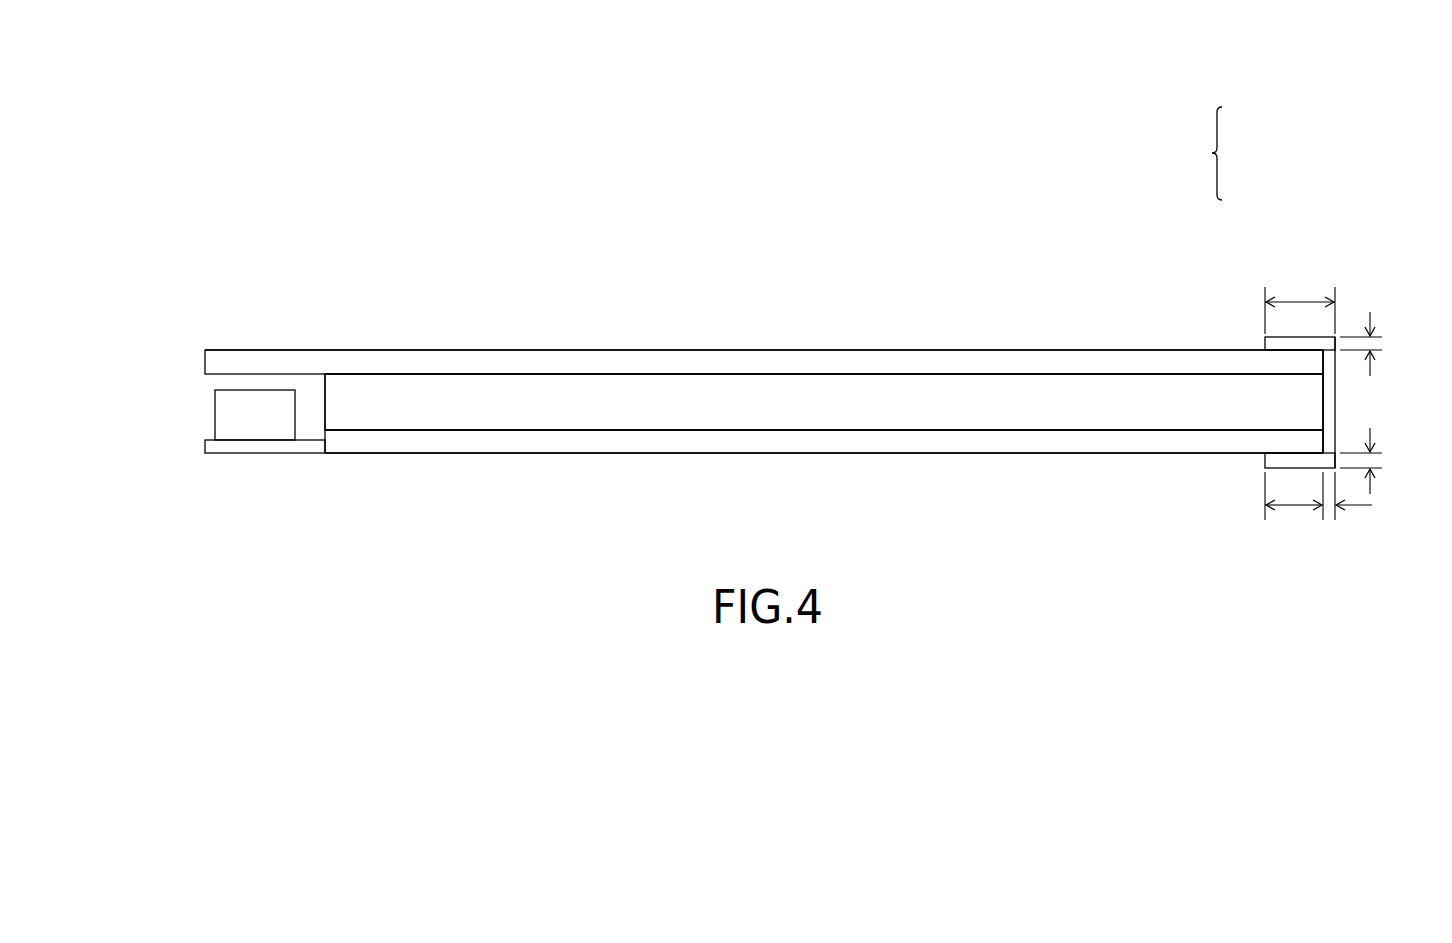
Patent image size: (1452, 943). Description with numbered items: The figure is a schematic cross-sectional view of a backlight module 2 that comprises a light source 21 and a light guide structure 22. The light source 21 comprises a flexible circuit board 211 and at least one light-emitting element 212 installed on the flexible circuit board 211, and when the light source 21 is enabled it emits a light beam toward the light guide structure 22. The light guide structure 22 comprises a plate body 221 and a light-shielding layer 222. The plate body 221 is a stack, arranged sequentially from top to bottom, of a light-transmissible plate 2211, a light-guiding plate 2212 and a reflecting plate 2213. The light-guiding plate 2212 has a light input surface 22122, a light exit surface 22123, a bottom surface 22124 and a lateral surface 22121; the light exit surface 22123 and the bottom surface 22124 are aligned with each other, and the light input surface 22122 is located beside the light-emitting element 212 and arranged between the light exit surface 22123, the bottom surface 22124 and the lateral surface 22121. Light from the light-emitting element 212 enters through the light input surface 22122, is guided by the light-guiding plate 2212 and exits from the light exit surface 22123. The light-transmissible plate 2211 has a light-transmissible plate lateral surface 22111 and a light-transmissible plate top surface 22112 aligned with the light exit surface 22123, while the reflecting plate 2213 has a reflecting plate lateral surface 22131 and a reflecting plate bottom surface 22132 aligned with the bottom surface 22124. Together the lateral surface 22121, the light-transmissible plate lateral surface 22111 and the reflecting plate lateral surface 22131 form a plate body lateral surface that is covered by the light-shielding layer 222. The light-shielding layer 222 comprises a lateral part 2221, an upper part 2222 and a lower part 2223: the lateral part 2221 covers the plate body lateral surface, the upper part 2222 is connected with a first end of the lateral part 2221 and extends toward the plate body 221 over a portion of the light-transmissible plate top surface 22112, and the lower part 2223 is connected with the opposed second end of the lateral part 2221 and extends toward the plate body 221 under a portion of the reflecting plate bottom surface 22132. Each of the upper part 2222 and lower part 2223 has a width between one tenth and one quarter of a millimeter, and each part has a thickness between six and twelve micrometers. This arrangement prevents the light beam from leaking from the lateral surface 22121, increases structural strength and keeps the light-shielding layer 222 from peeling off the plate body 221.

The backlight module 2 is at (281, 247).
The light source 21 is at (145, 390).
The flexible circuit board 211 is at (230, 448).
The light-emitting element 212 is at (228, 422).
The light guide structure 22 is at (437, 95).
The plate body 221 is at (502, 53).
The light-transmissible plate 2211 is at (682, 188).
The light-transmissible plate lateral surface 22111 is at (1320, 362).
The light-transmissible plate top surface 22112 is at (1051, 349).
The light-guiding plate 2212 is at (868, 223).
The lateral surface 22121 is at (1320, 405).
The light input surface 22122 is at (321, 391).
The light exit surface 22123 is at (467, 372).
The bottom surface 22124 is at (530, 433).
The reflecting plate 2213 is at (1052, 188).
The reflecting plate lateral surface 22131 is at (1320, 445).
The reflecting plate bottom surface 22132 is at (1015, 490).
The light-shielding layer 222 is at (502, 180).
The lateral part 2221 is at (1380, 403).
The upper part 2222 is at (1268, 348).
The lower part 2223 is at (1268, 460).